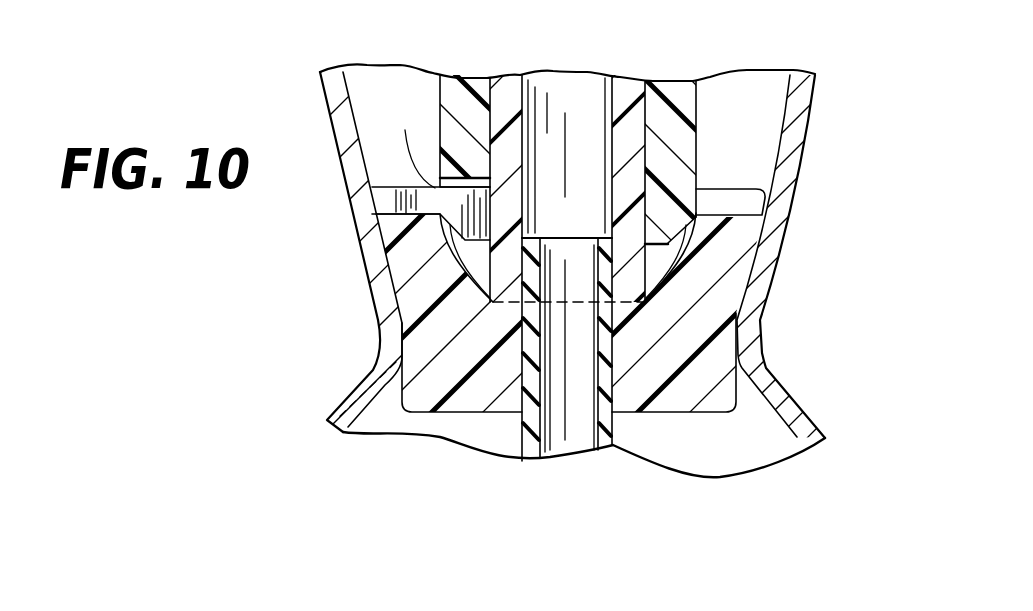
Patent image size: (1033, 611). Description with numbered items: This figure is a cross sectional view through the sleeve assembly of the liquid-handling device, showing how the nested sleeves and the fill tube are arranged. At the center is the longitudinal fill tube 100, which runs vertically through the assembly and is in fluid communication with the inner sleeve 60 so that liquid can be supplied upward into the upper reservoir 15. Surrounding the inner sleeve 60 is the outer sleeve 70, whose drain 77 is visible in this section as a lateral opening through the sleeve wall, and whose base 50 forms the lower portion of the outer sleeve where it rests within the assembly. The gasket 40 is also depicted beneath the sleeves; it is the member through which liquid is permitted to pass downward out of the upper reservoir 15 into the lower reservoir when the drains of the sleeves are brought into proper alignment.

The upper reservoir 15 is at (812, 100).
The gasket 40 is at (737, 412).
The base of the outer sleeve 50 is at (742, 190).
The inner sleeve 60 is at (645, 138).
The outer sleeve 70 is at (697, 97).
The drain 77 is at (382, 188).
The longitudinal fill tube 100 is at (523, 425).